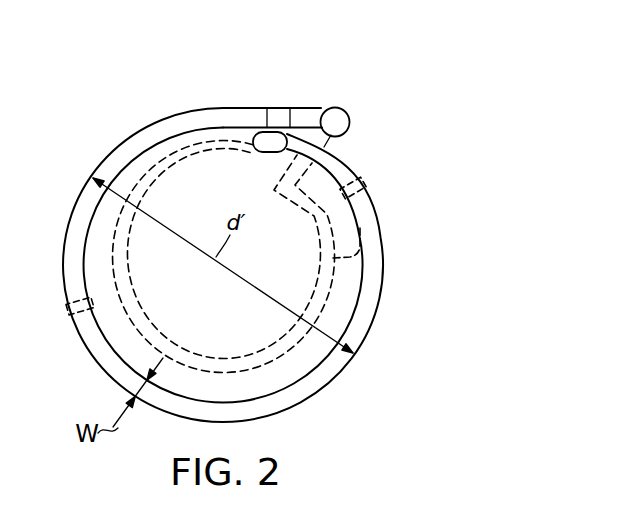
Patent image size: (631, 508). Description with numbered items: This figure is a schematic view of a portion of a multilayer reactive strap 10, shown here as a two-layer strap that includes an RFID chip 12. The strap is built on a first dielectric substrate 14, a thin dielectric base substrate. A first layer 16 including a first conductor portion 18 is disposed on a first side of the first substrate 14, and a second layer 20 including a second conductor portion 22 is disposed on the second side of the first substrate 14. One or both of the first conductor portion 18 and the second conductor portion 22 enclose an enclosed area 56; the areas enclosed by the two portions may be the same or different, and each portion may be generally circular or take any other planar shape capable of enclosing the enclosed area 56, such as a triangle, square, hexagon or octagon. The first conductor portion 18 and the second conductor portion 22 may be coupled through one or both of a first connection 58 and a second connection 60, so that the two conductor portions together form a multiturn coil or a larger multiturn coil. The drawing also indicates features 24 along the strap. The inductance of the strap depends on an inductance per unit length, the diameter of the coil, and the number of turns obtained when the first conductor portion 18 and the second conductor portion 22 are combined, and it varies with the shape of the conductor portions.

The multilayer reactive strap 10 is at (444, 198).
The RFID chip 12 is at (281, 107).
The first dielectric substrate 14 is at (298, 372).
The first layer 16 is at (369, 343).
The first conductor portion 18 is at (381, 288).
The second layer 20 is at (330, 212).
The second conductor portion 22 is at (361, 227).
The apertures 24 is at (114, 288).
The enclosed area 56 is at (191, 178).
The first connection 58 is at (336, 116).
The second connection 60 is at (262, 134).